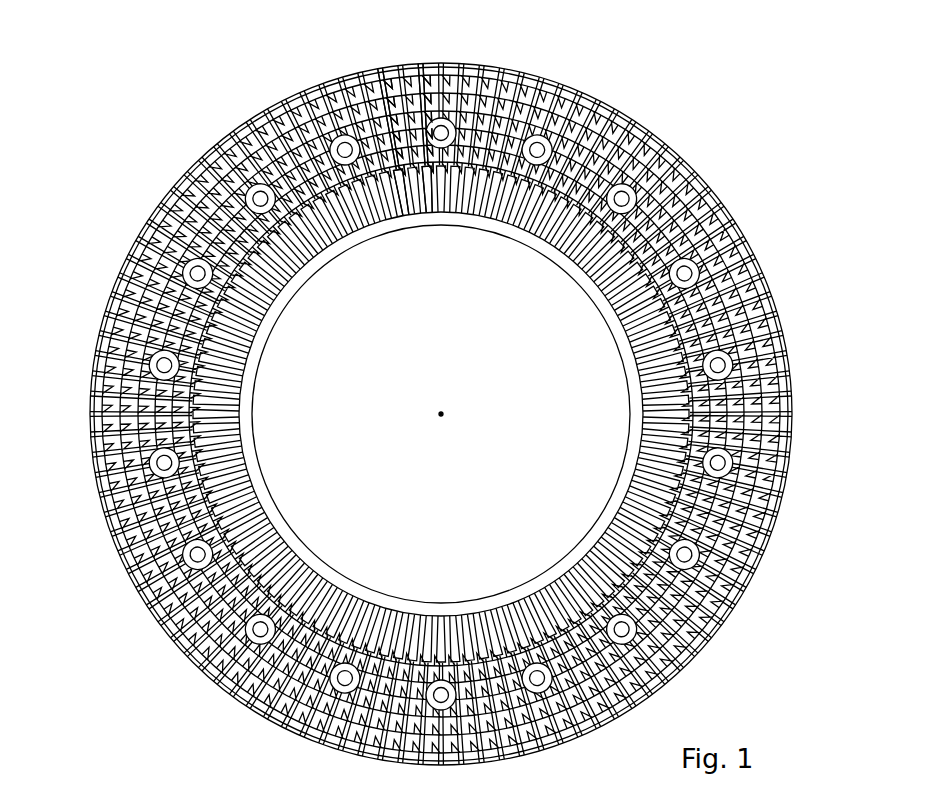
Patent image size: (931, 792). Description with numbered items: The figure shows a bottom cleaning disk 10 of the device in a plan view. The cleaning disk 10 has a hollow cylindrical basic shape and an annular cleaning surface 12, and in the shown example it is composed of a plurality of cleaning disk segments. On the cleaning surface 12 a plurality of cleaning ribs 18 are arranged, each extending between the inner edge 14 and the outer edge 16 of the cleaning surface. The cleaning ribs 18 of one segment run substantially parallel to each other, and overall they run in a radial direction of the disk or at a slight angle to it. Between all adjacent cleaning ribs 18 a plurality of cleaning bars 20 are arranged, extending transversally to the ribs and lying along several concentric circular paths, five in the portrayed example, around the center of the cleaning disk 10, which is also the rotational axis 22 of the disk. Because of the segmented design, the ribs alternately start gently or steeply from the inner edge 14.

The bottom cleaning disk 10 is at (440, 414).
The annular cleaning surface 12 is at (441, 414).
The inner edge 14 is at (441, 414).
The outer edge 16 is at (440, 414).
The cleaning ribs 18 is at (427, 138).
The cleaning bars 20 is at (395, 141).
The rotational axis 22 is at (441, 414).